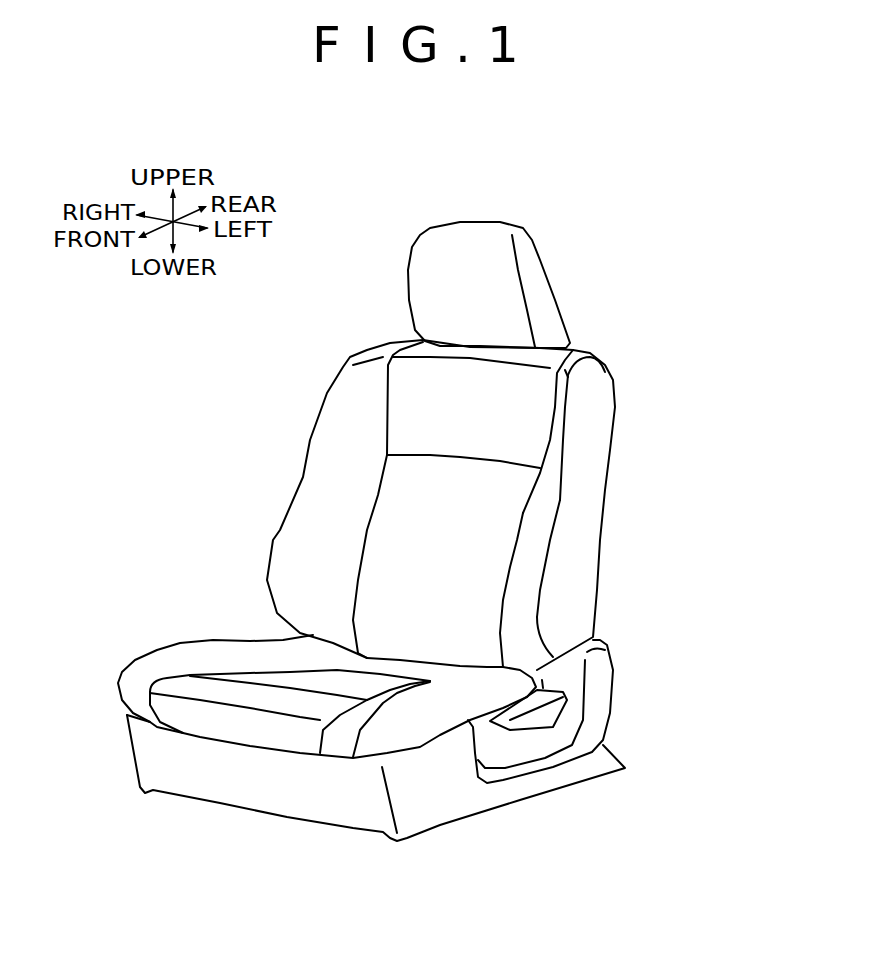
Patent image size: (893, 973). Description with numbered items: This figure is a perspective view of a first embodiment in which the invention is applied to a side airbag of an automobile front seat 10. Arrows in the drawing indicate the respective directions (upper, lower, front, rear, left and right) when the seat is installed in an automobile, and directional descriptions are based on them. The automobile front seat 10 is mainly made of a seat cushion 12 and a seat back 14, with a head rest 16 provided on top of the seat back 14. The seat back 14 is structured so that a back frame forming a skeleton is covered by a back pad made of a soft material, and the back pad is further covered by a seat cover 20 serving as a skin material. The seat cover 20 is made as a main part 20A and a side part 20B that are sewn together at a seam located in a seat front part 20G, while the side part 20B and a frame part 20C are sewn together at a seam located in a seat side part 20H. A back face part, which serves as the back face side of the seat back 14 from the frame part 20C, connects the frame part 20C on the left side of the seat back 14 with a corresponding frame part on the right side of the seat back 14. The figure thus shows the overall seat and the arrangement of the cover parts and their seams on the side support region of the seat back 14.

The automobile front seat 10 is at (160, 424).
The seat cushion 12 is at (188, 658).
The seat back 14 is at (343, 398).
The head rest 16 is at (540, 285).
The seat cover 20 is at (615, 393).
The main part 20A is at (495, 505).
The side part 20B is at (540, 520).
The frame part 20C is at (573, 555).
The seat front part 20G is at (707, 430).
The seat side part 20H is at (545, 579).